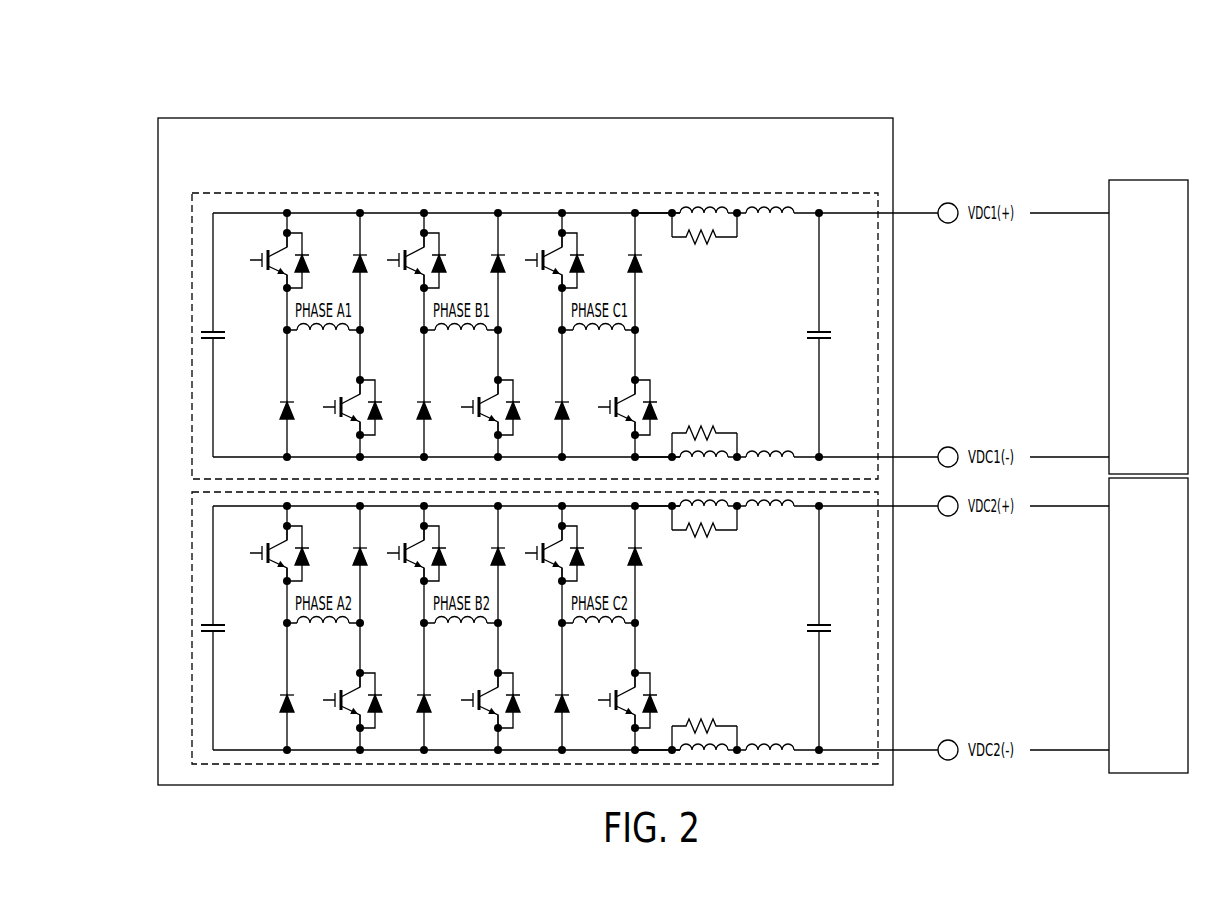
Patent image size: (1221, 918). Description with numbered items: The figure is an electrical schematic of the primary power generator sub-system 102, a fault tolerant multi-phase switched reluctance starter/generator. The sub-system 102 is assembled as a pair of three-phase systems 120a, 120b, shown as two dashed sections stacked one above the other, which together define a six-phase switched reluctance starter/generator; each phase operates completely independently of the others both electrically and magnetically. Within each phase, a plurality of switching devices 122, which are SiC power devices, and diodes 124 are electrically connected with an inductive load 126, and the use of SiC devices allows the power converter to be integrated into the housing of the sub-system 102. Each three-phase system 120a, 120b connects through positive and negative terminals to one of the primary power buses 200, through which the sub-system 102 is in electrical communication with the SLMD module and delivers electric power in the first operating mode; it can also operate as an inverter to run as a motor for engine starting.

The primary power generator sub-system 102 is at (1012, 128).
The three-phase system 120a is at (190, 373).
The three-phase system 120b is at (190, 553).
The switching device 122 is at (258, 266).
The diode 124 is at (362, 277).
The inductive load 126 is at (320, 334).
The primary power bus 200 is at (1108, 240).